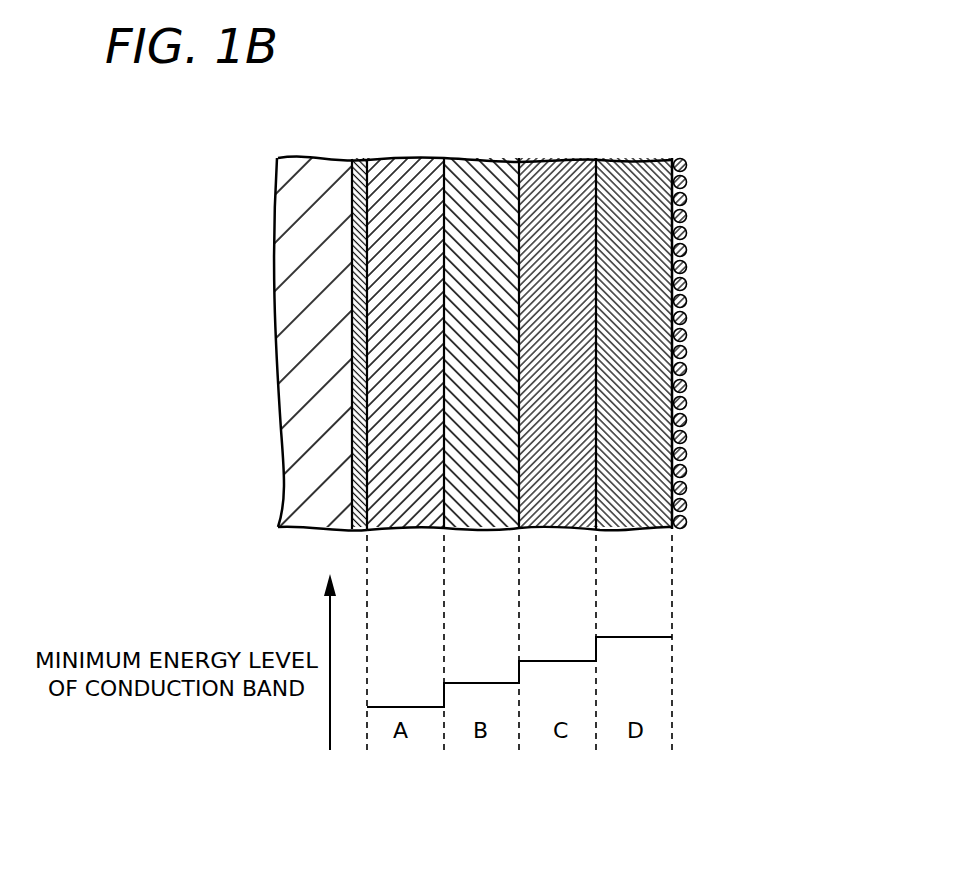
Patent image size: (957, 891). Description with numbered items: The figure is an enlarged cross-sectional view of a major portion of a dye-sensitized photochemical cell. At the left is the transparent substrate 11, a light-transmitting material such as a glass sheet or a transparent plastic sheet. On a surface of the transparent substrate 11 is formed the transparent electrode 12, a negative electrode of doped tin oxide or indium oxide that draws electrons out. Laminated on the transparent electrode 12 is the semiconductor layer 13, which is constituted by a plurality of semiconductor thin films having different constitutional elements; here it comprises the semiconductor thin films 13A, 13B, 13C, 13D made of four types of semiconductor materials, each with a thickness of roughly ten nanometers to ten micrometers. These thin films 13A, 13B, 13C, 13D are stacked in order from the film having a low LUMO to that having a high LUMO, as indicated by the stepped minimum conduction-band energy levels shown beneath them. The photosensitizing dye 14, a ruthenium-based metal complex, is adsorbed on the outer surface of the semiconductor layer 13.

The transparent substrate 11 is at (286, 165).
The transparent electrode 12 is at (355, 165).
The semiconductor layer 13 is at (811, 200).
The semiconductor thin film 13A is at (410, 222).
The semiconductor thin film 13B is at (483, 258).
The semiconductor thin film 13C is at (574, 295).
The semiconductor thin film 13D is at (640, 338).
The photosensitizing dye 14 is at (688, 477).